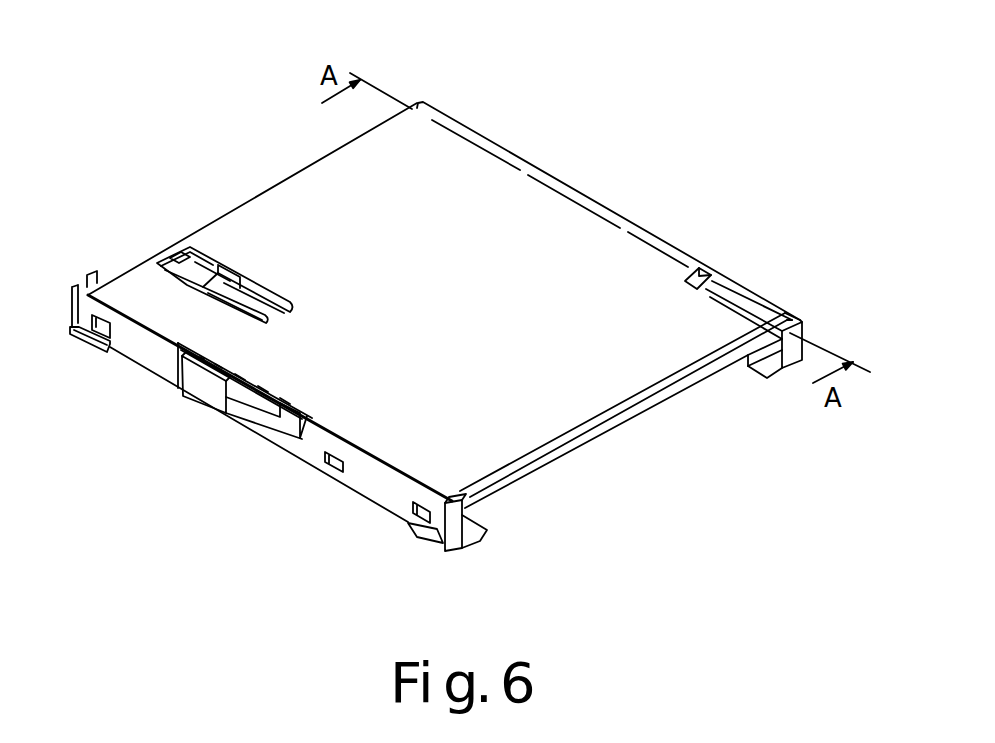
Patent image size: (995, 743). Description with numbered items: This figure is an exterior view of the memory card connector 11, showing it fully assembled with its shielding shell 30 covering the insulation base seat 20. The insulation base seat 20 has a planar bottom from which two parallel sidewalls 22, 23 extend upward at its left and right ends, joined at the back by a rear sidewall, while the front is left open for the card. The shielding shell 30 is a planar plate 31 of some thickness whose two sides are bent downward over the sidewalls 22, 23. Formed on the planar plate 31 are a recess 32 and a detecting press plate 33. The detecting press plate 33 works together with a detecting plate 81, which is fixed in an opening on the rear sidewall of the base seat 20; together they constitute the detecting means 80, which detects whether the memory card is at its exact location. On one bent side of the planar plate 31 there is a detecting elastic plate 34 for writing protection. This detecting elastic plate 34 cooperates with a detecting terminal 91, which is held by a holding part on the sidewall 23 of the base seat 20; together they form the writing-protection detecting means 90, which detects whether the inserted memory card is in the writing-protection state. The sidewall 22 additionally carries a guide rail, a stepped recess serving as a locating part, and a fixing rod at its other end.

The memory card connector 11 is at (522, 87).
The insulation base seat 20 is at (812, 327).
The sidewall 22 is at (792, 358).
The sidewall 23 is at (465, 543).
The shielding shell 30 is at (657, 180).
The planar plate 31 is at (547, 203).
The recess 32 is at (697, 272).
The detecting press plate 33 is at (237, 290).
The detecting elastic plate 34 is at (267, 410).
The detecting means 80 is at (210, 65).
The detecting plate 81 is at (183, 263).
The writing-protection detecting means 90 is at (180, 537).
The detecting terminal 91 is at (77, 313).